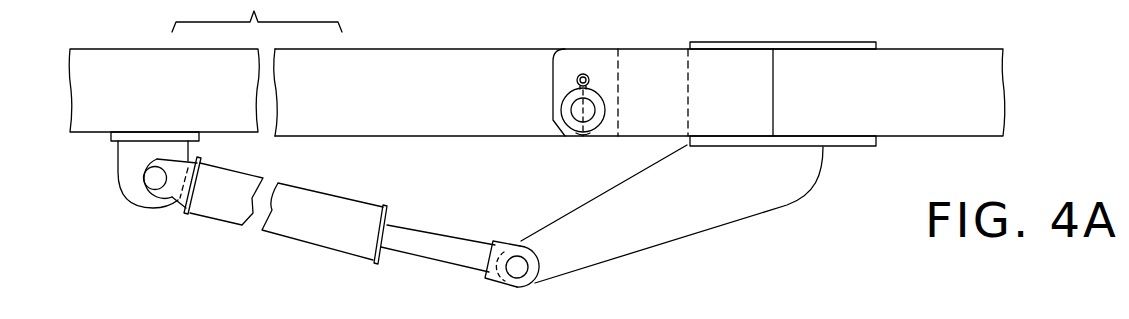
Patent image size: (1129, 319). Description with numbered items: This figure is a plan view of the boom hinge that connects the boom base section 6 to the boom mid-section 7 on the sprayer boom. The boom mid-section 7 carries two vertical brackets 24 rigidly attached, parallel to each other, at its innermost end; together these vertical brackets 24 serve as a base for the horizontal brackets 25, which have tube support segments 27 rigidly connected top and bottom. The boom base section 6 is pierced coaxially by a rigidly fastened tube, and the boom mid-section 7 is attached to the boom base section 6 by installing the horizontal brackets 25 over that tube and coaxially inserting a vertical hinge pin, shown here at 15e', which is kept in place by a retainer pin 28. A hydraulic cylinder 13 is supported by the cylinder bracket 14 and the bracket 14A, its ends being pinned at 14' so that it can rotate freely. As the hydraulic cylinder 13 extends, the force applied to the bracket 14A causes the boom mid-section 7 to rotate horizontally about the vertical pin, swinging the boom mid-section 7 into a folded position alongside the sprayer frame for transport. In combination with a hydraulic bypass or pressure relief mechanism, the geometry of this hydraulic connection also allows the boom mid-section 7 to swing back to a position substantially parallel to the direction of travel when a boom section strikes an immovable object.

The boom base section 6 is at (417, 96).
The boom mid-section 7 is at (896, 98).
The hydraulic cylinder 13 is at (312, 223).
The cylinder bracket 14 is at (146, 186).
The pin 14' is at (331, 231).
The bracket 14A is at (671, 212).
The support bracket 15e' is at (549, 106).
The vertical bracket 24 is at (800, 42).
The horizontal bracket 25 is at (661, 98).
The tube support segment 27 is at (591, 131).
The retainer pin 28 is at (586, 74).